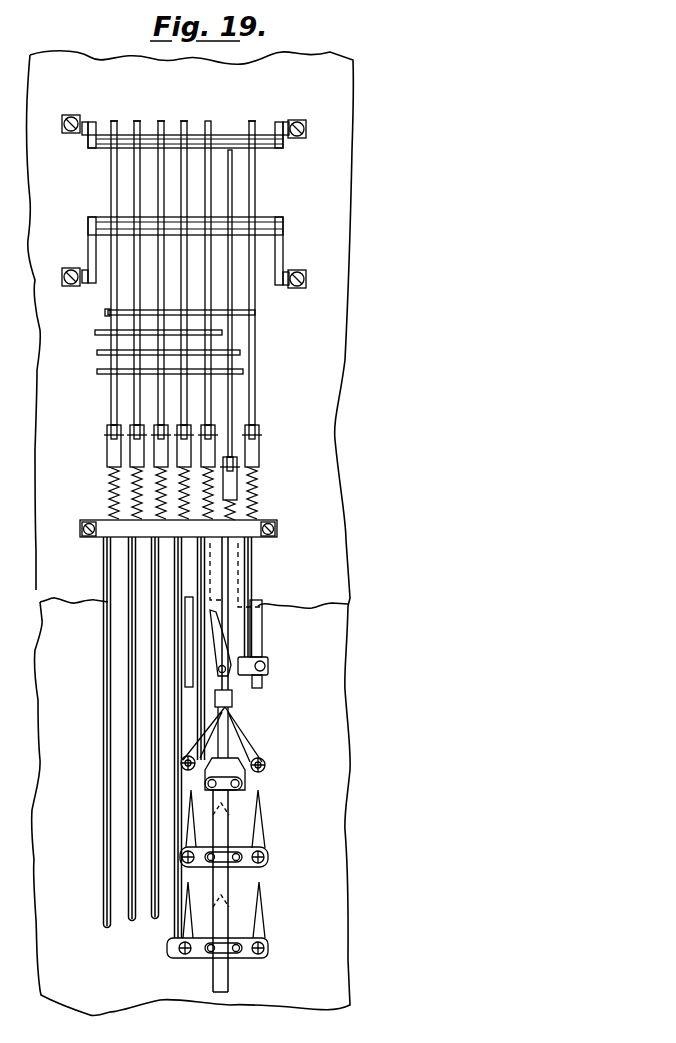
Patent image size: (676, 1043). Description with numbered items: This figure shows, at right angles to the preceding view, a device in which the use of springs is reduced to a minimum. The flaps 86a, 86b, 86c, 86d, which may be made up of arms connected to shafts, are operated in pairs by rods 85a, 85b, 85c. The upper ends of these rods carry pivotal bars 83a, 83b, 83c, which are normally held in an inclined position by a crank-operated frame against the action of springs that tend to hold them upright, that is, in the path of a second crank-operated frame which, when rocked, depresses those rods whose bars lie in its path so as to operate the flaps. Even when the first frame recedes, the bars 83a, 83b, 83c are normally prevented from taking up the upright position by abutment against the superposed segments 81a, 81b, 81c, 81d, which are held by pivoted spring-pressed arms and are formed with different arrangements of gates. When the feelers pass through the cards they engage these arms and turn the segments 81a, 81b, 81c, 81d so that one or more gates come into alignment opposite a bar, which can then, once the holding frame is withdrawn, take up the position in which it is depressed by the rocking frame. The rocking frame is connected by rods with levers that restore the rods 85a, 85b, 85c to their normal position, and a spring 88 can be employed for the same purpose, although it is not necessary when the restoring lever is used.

The pivotal bar 83a is at (253, 168).
The pivotal bar 83b is at (205, 202).
The pivotal bar 83c is at (255, 221).
The superposed segment 81a is at (255, 312).
The superposed segment 81b is at (222, 332).
The superposed segment 81c is at (240, 352).
The superposed segment 81d is at (243, 371).
The spring 88 is at (253, 507).
The rod 85a is at (247, 553).
The rod 85b is at (223, 573).
The rod 85c is at (198, 588).
The flap 86a is at (268, 665).
The flap 86b is at (248, 742).
The flap 86c is at (258, 827).
The flap 86d is at (258, 930).